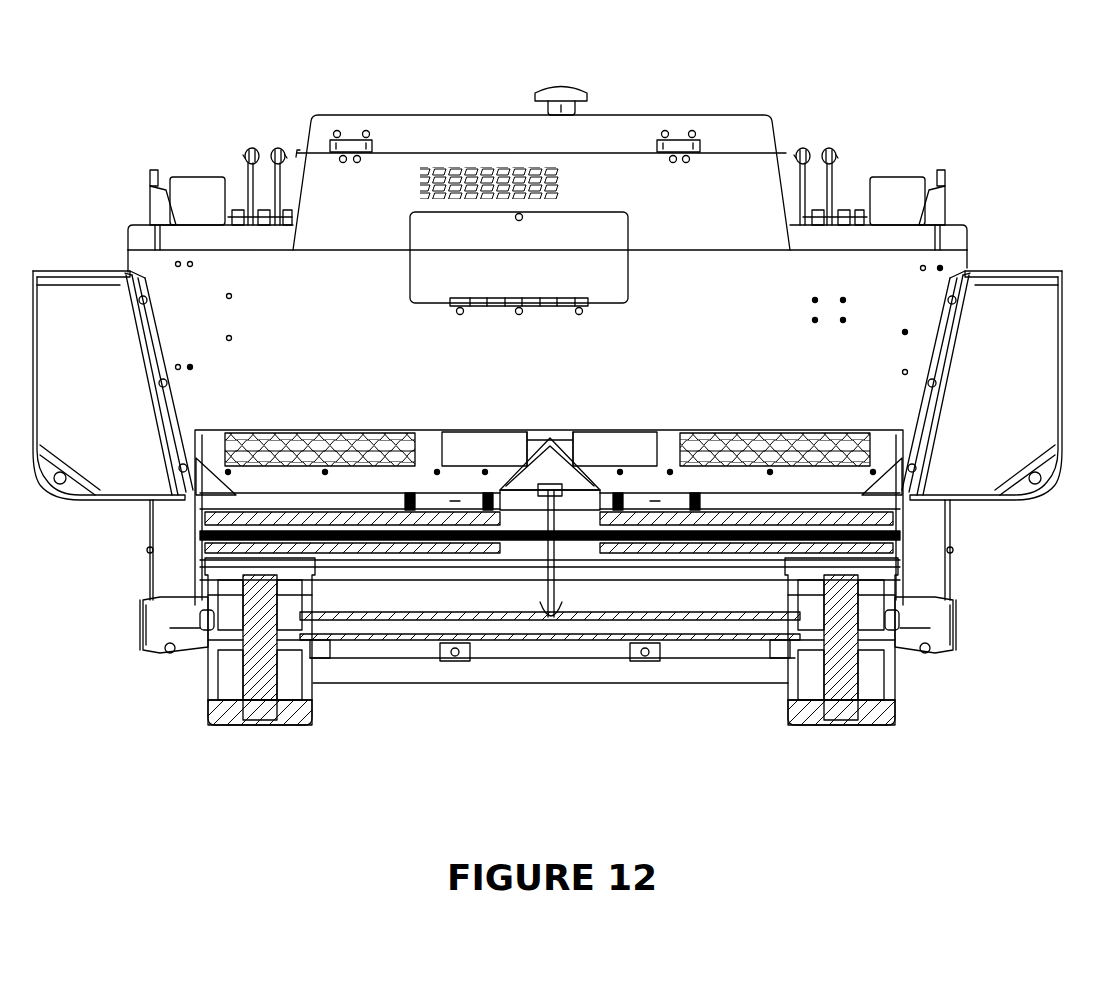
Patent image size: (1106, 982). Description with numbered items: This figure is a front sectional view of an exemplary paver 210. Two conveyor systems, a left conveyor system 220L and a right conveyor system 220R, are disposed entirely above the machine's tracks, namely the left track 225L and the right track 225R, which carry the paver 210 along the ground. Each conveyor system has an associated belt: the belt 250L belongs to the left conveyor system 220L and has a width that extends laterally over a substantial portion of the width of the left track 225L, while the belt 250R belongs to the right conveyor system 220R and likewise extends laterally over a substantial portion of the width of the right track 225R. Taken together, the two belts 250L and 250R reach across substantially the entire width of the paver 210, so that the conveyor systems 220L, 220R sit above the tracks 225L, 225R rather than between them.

The paver 210 is at (805, 97).
The right conveyor system 220R is at (390, 484).
The left conveyor system 220L is at (725, 484).
The right track 225R is at (260, 730).
The left track 225L is at (837, 737).
The right belt 250R is at (308, 505).
The left belt 250L is at (800, 498).